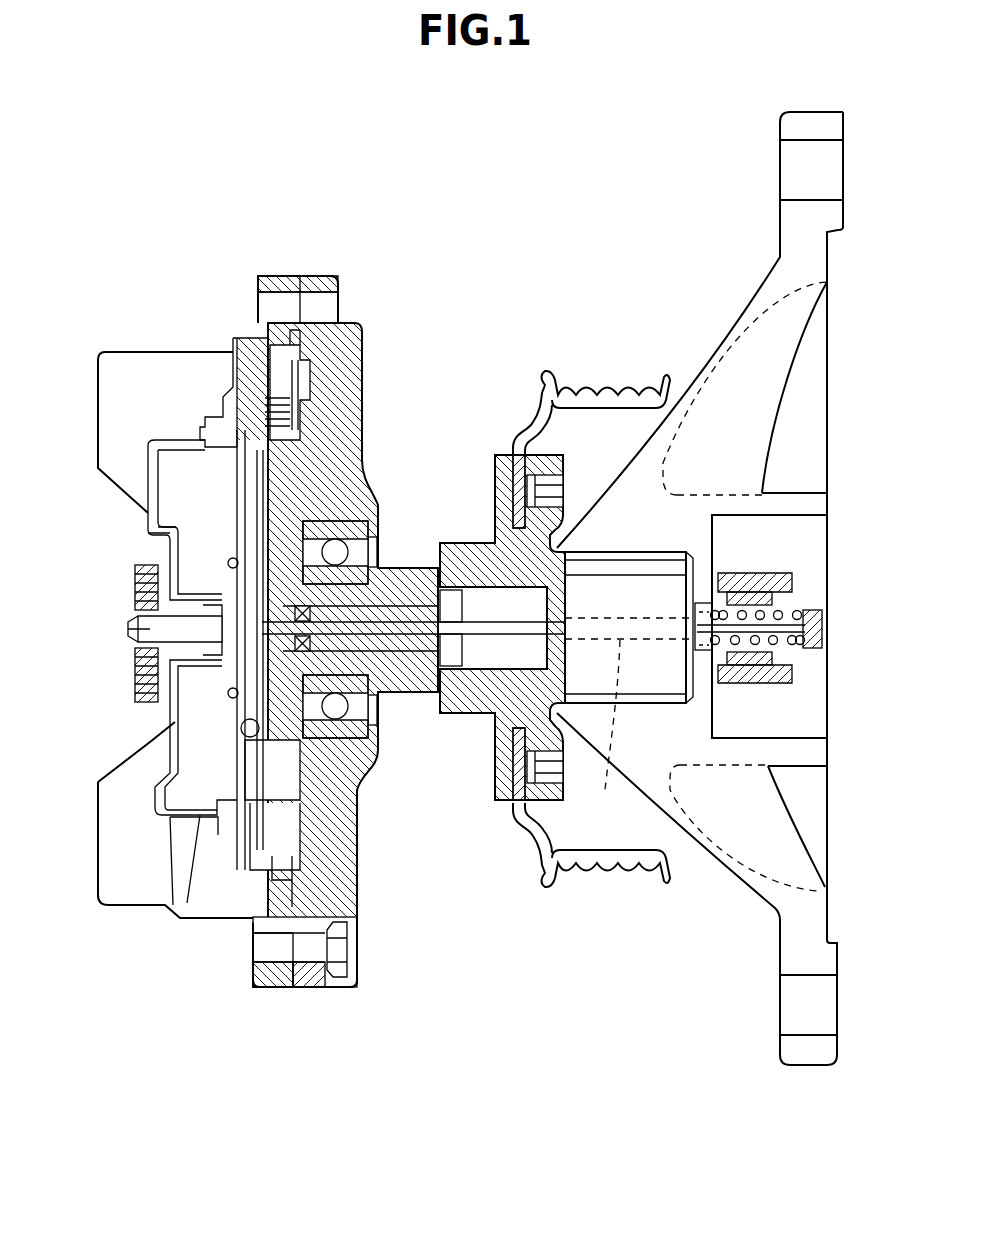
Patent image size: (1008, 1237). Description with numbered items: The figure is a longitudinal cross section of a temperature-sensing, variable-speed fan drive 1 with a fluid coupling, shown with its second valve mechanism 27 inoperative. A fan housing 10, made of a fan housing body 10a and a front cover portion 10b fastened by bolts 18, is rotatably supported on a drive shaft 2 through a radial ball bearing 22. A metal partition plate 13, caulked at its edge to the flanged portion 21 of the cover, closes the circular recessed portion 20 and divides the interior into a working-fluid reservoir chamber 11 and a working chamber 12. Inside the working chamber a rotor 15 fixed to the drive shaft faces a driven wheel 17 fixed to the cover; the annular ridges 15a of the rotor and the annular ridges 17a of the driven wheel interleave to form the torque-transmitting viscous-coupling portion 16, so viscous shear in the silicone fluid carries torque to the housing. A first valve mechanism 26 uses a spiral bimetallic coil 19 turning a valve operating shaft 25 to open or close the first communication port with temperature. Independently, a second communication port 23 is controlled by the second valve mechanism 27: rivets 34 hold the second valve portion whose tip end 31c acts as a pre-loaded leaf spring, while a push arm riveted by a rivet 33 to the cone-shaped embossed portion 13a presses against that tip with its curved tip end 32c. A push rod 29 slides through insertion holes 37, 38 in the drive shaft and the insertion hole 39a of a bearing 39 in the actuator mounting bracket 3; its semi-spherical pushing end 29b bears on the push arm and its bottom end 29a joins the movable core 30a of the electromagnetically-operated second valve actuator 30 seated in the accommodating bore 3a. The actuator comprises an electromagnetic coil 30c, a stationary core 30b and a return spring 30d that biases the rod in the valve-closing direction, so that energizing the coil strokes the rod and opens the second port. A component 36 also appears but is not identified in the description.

The fan drive 1 is at (172, 947).
The drive shaft 2 is at (437, 898).
The actuator mounting bracket 3 is at (725, 908).
The actuator accommodating bore 3a is at (790, 513).
The fan housing 10 is at (290, 1003).
The fan housing body 10a is at (323, 983).
The front cover portion 10b is at (268, 983).
The working-fluid reservoir chamber 11 is at (237, 555).
The working chamber 12 is at (283, 470).
The partition plate 13 is at (230, 692).
The embossed portion 13a is at (232, 700).
The rotor 15 is at (293, 492).
The annular ridges of rotor 15a is at (290, 813).
The torque-transmitting viscous-coupling portion 16 is at (285, 385).
The driven wheel 17 is at (247, 372).
The annular ridges of driven wheel 17a is at (277, 853).
The bolts 18 is at (340, 970).
The bimetallic coil 19 is at (140, 587).
The recessed portion 20 is at (143, 488).
The flanged portion 21 is at (250, 343).
The radial ball bearing 22 is at (330, 527).
The second communication port 23 is at (275, 415).
The valve operating shaft 25 is at (153, 640).
The first valve mechanism 26 is at (223, 667).
The second valve mechanism 27 is at (340, 550).
The push rod 29 is at (425, 630).
The bottom end of push rod 29a is at (780, 630).
The semi-spherical pushing end 29b is at (268, 615).
The second valve actuator 30 is at (795, 547).
The movable core 30a is at (797, 615).
The stationary core 30b is at (770, 598).
The electromagnetic coil 30c is at (780, 673).
The return spring 30d is at (790, 645).
The tip end of second valve portion 31c is at (205, 415).
The curved tip end of push arm 32c is at (263, 443).
The rivet 33 is at (323, 763).
The rivets 34 is at (175, 527).
The seal 36 is at (378, 668).
The insertion hole 37 is at (427, 655).
The insertion hole 38 is at (497, 617).
The bearing 39 is at (623, 565).
The insertion hole of bearing 39a is at (606, 729).